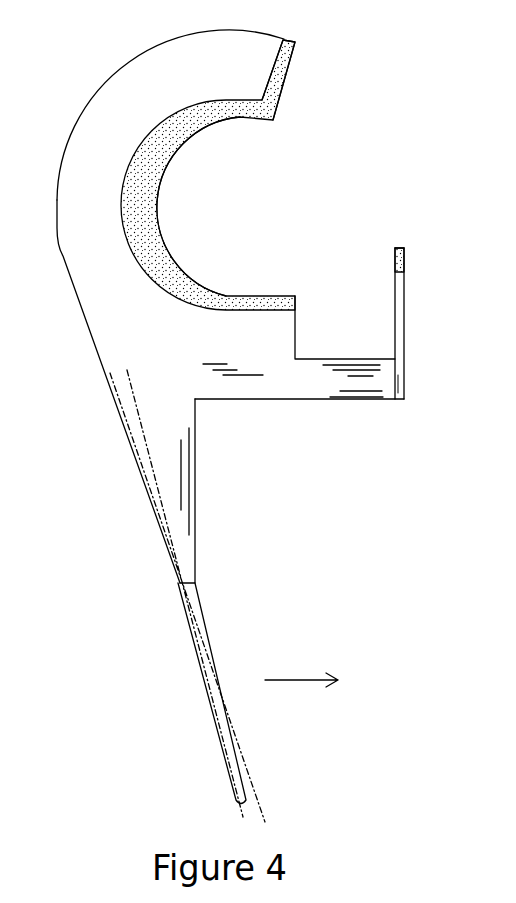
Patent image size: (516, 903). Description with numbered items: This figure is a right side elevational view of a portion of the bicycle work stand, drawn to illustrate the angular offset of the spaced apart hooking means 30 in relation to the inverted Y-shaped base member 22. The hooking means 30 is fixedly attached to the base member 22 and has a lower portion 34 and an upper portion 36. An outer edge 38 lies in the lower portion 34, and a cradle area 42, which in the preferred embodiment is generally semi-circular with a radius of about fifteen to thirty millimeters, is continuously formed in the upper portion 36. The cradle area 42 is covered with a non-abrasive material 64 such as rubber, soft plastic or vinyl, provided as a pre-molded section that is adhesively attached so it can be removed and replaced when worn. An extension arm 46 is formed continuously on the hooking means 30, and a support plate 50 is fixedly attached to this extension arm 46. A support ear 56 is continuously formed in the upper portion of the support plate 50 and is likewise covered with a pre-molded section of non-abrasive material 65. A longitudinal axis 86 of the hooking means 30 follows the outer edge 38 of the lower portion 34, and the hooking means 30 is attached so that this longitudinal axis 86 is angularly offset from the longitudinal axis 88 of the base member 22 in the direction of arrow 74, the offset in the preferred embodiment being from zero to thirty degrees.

The inverted Y-shaped base member 22 is at (205, 695).
The spaced apart hooking means 30 is at (298, 52).
The lower portion 34 is at (178, 425).
The upper portion 36 is at (114, 201).
The outer edge 38 is at (158, 532).
The cradle area 42 is at (195, 290).
The extension arm 46 is at (333, 382).
The support plate 50 is at (405, 343).
The support ear 56 is at (405, 247).
The non-abrasive material 64 is at (151, 138).
The non-abrasive material 65 is at (405, 260).
The arrow 74 is at (293, 681).
The longitudinal axis of spaced apart hooking means 86 is at (122, 413).
The longitudinal axis of base member 88 is at (148, 457).